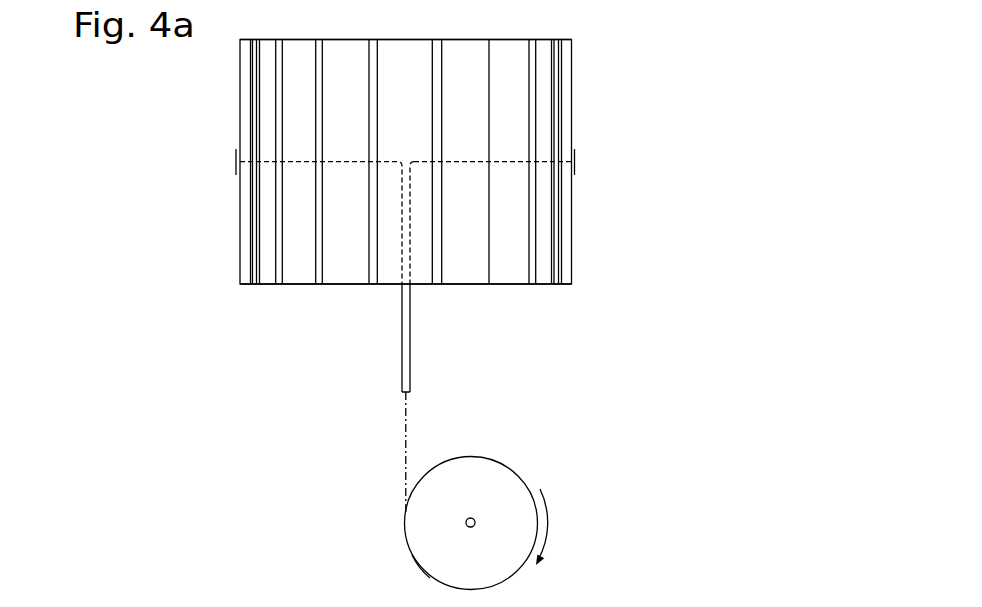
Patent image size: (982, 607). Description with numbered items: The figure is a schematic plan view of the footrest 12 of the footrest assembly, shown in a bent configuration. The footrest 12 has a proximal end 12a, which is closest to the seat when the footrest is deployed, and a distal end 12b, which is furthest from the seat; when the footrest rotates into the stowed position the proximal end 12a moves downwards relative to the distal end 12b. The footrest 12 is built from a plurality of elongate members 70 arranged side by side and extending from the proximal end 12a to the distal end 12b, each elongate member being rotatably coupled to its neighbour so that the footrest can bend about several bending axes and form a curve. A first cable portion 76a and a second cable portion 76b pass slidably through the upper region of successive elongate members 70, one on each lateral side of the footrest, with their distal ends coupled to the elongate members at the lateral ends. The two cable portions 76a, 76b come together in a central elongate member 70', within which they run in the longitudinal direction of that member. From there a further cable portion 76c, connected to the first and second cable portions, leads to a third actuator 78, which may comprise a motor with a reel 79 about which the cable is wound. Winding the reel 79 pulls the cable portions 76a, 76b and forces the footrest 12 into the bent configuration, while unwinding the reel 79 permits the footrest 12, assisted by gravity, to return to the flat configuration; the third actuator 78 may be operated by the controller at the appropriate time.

The footrest 12 is at (467, 88).
The proximal end 12a is at (537, 282).
The distal end 12b is at (539, 41).
The elongate members 70 is at (363, 162).
The central elongate member 70' is at (367, 199).
The first cable portion 76a is at (402, 329).
The second cable portion 76b is at (410, 328).
The further cable portion 76c is at (405, 492).
The third actuator 78 is at (483, 481).
The reel 79 is at (420, 567).